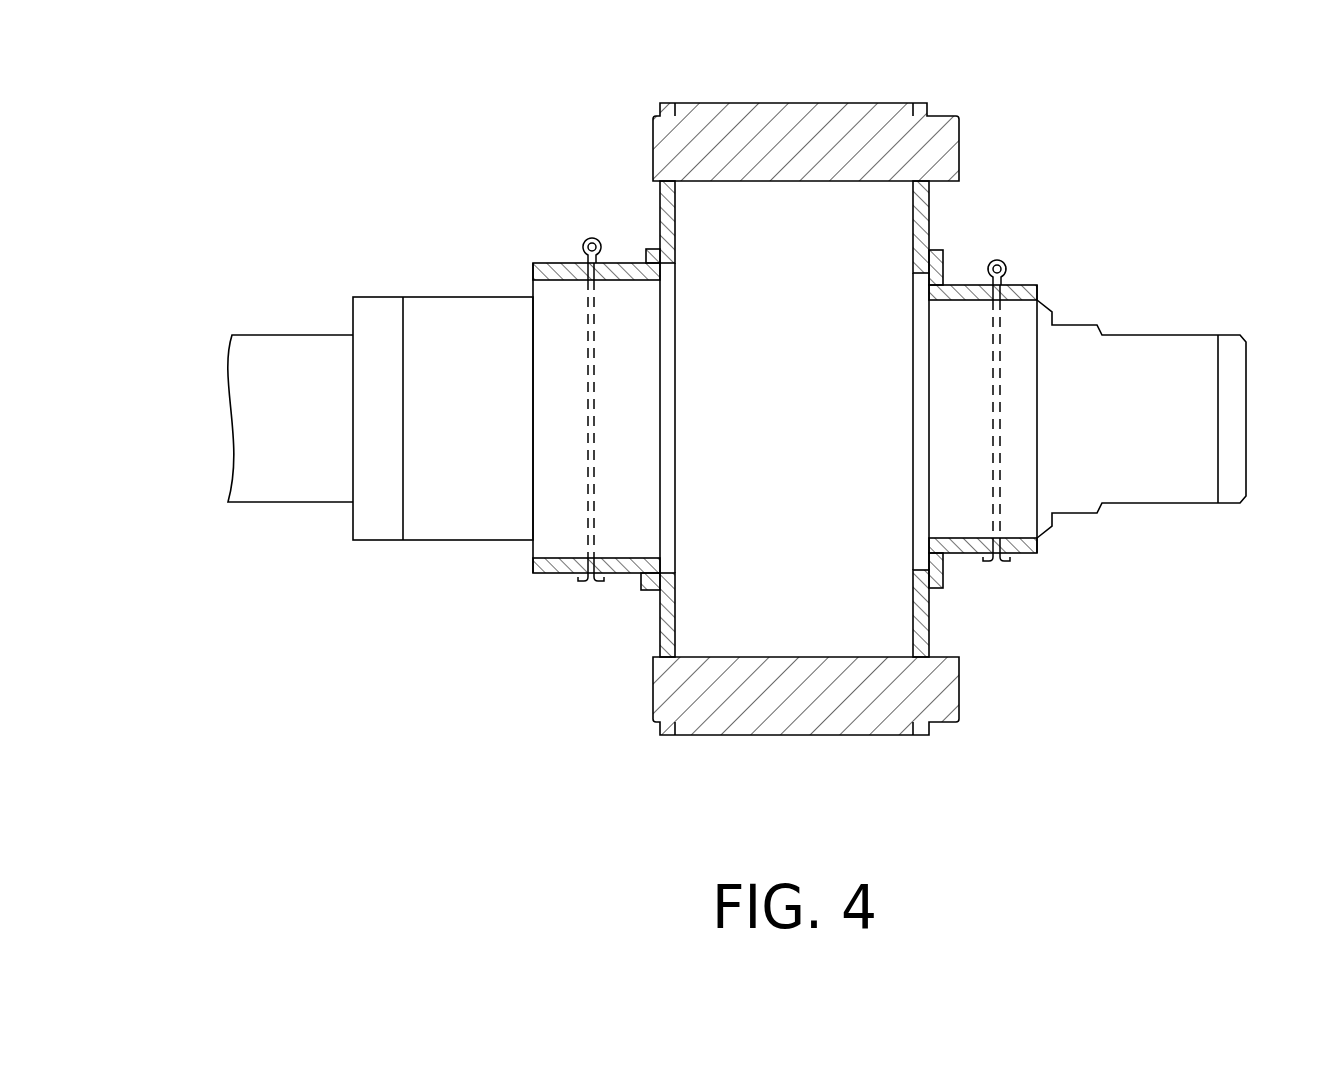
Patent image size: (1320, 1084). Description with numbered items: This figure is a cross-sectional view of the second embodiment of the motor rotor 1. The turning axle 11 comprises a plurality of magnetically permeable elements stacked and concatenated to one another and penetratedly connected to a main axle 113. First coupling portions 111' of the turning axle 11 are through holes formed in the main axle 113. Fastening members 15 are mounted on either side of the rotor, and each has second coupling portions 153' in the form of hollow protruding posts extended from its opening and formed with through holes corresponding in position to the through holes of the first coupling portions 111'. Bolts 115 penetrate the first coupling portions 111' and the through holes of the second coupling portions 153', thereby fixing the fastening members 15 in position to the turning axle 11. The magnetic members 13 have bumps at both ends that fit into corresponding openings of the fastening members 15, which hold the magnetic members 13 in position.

The bearing assembly 1 is at (1193, 128).
The turning axle 11 is at (333, 528).
The first coupling portion 111' is at (504, 444).
The main axle 113 is at (1040, 303).
The bolt 115 is at (587, 240).
The magnetic member 13 is at (962, 150).
The fastening member 15 is at (553, 576).
The second coupling portion 153' is at (606, 217).